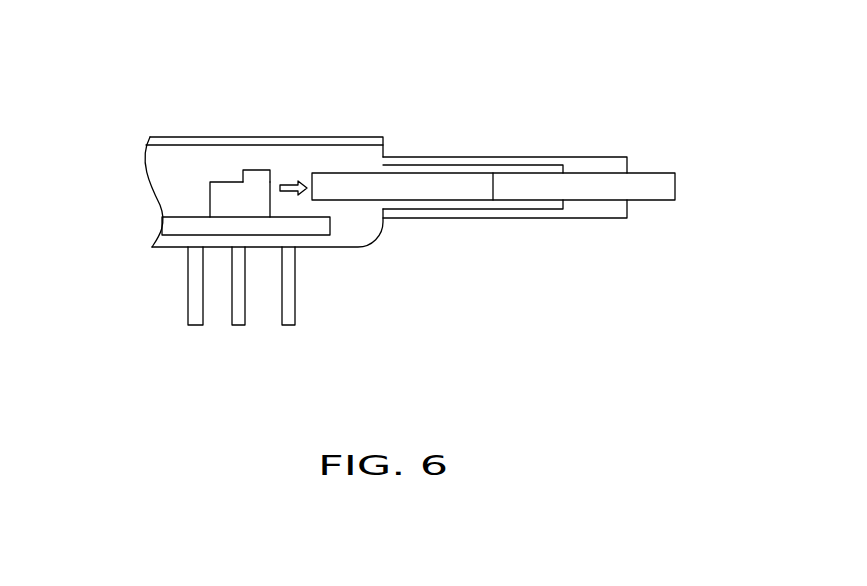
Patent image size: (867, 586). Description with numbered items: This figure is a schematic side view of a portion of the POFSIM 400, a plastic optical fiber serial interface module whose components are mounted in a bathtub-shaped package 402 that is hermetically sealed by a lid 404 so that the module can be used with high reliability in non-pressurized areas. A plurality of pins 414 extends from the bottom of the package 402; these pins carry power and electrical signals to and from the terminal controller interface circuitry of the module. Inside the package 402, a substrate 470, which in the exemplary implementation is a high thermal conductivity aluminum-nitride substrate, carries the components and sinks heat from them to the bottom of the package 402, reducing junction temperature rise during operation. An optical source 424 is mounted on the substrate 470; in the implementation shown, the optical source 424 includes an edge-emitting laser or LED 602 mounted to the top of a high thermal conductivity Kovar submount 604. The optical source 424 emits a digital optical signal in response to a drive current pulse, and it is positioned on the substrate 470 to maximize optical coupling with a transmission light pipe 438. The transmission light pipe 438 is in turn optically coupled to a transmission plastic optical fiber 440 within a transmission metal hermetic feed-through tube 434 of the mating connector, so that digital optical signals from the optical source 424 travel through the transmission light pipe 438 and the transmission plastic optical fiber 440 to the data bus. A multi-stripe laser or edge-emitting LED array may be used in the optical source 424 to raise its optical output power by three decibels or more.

The POFSIM 400 is at (532, 92).
The package 402 is at (340, 252).
The lid 404 is at (165, 140).
The pins 414 is at (195, 313).
The optical source 424 is at (198, 192).
The transmission metal hermetic feed-through tube 434 is at (542, 210).
The transmission light pipe 438 is at (440, 183).
The transmission plastic optical fiber 440 is at (593, 170).
The substrate 470 is at (177, 228).
The edge-emitting laser or LED 602 is at (256, 178).
The submount 604 is at (228, 190).